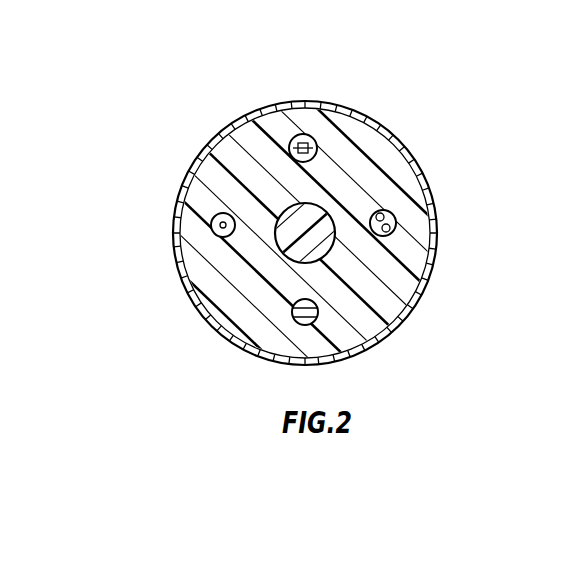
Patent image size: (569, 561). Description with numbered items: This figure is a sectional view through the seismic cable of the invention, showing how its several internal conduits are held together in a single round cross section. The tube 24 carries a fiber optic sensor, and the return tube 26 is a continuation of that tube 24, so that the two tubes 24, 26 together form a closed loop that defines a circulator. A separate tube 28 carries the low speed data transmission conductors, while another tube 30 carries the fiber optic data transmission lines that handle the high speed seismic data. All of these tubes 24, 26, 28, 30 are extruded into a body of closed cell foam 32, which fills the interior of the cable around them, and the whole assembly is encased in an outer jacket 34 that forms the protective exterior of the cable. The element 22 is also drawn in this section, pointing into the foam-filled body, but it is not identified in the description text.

The body 22 is at (327, 257).
The fastener 24 is at (313, 128).
The fastener 26 is at (296, 322).
The fastener 28 is at (397, 223).
The fastener 30 is at (211, 227).
The hatched region 32 is at (200, 288).
The outer ring 34 is at (410, 157).